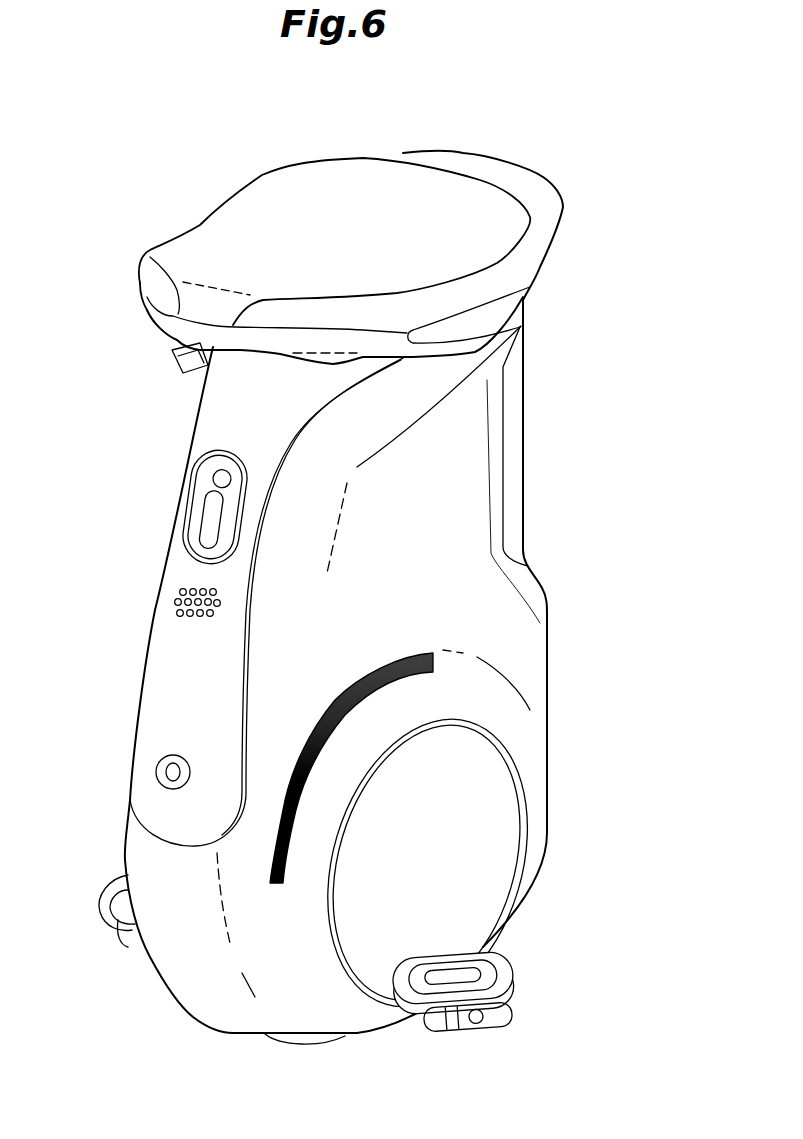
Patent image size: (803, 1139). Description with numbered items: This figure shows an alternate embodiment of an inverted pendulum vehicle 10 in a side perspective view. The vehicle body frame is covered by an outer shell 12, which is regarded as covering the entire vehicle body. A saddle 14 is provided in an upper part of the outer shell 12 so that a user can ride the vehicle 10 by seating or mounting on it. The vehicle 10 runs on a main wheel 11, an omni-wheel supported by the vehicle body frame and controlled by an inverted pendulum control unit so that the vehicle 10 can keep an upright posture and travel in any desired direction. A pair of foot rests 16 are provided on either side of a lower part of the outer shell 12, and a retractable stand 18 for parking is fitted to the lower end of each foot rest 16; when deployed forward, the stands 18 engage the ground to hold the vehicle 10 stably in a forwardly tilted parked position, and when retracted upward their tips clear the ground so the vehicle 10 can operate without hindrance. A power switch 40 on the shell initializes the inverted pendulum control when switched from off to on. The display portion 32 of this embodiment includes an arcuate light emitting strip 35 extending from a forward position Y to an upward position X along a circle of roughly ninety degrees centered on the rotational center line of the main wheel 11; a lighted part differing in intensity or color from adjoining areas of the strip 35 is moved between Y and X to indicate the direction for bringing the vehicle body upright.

The inverted pendulum vehicle 10 is at (153, 473).
The main wheel 11 is at (317, 1040).
The outer shell 12 is at (515, 633).
The saddle 14 is at (357, 172).
The foot rest 16 is at (113, 887).
The retractable stand 18 is at (127, 937).
The display portion 32 is at (347, 684).
The arcuate light emitting strip 35 is at (307, 737).
The power switch 40 is at (167, 773).